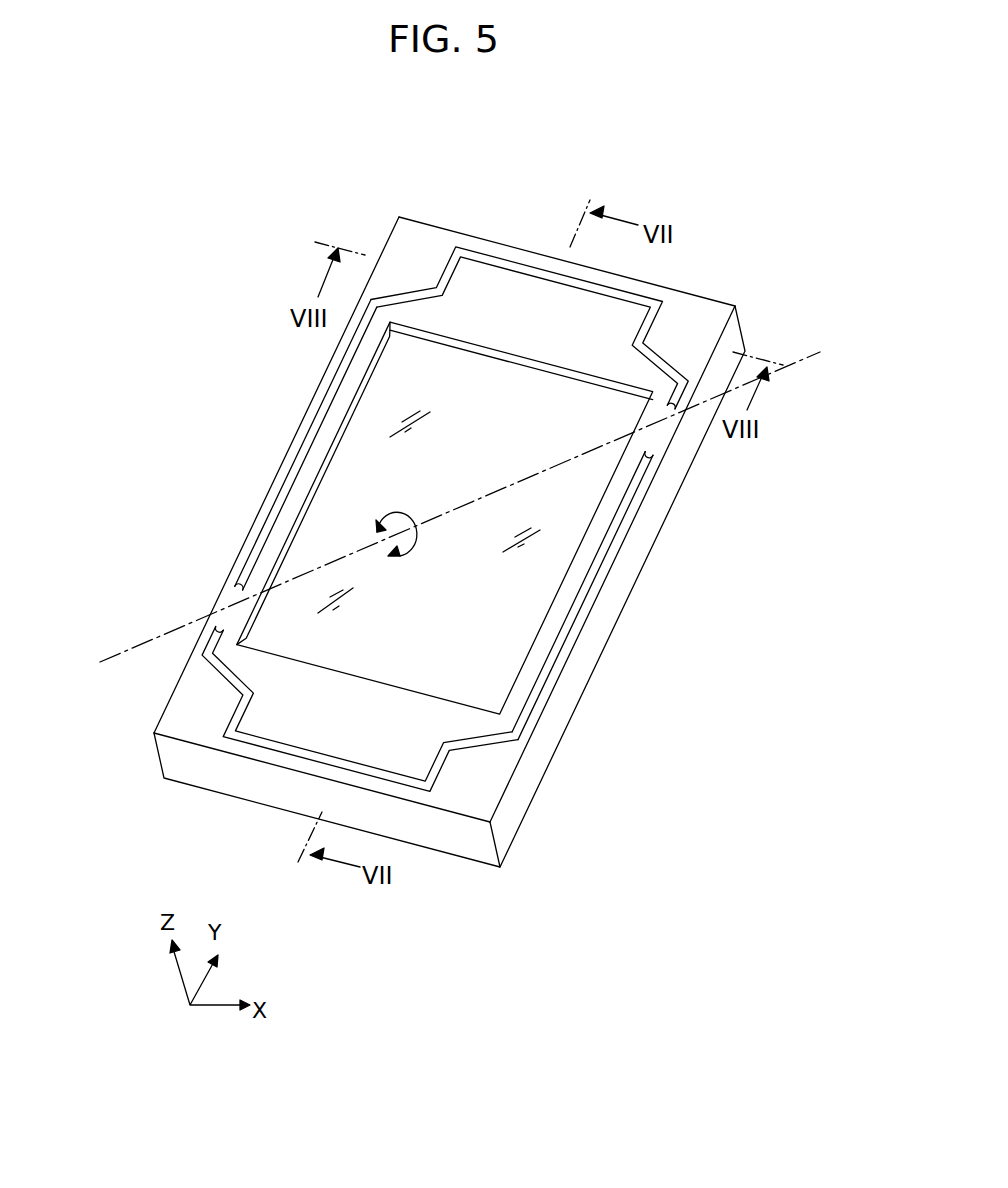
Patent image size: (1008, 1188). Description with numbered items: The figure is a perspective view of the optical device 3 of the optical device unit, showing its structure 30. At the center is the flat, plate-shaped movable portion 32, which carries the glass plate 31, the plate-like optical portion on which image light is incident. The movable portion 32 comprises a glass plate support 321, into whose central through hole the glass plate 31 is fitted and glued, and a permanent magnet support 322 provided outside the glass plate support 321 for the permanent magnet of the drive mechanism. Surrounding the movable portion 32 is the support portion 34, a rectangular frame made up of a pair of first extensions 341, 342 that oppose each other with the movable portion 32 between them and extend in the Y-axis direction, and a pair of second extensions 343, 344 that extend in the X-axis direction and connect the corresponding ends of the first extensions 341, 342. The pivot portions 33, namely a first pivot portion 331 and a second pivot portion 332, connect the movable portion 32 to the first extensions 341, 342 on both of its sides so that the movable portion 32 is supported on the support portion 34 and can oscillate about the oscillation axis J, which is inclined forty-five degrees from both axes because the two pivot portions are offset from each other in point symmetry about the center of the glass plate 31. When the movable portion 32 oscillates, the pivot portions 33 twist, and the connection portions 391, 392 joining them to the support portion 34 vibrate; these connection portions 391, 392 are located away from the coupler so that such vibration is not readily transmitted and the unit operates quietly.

The optical device 3 is at (708, 200).
The structure 30 is at (553, 772).
The glass plate 31 is at (355, 453).
The movable portion 32 is at (418, 441).
The glass plate support 321 is at (303, 497).
The permanent magnet support 322 is at (527, 293).
The pivot portions 33 is at (460, 520).
The first pivot portion 331 is at (230, 597).
The second pivot portion 332 is at (652, 440).
The support portion 34 is at (449, 562).
The first extension 341 is at (332, 365).
The first extension 342 is at (615, 598).
The second extension 343 is at (615, 282).
The second extension 344 is at (383, 783).
The connection portion 391 is at (212, 602).
The connection portion 392 is at (690, 438).
The oscillation axis J is at (452, 515).